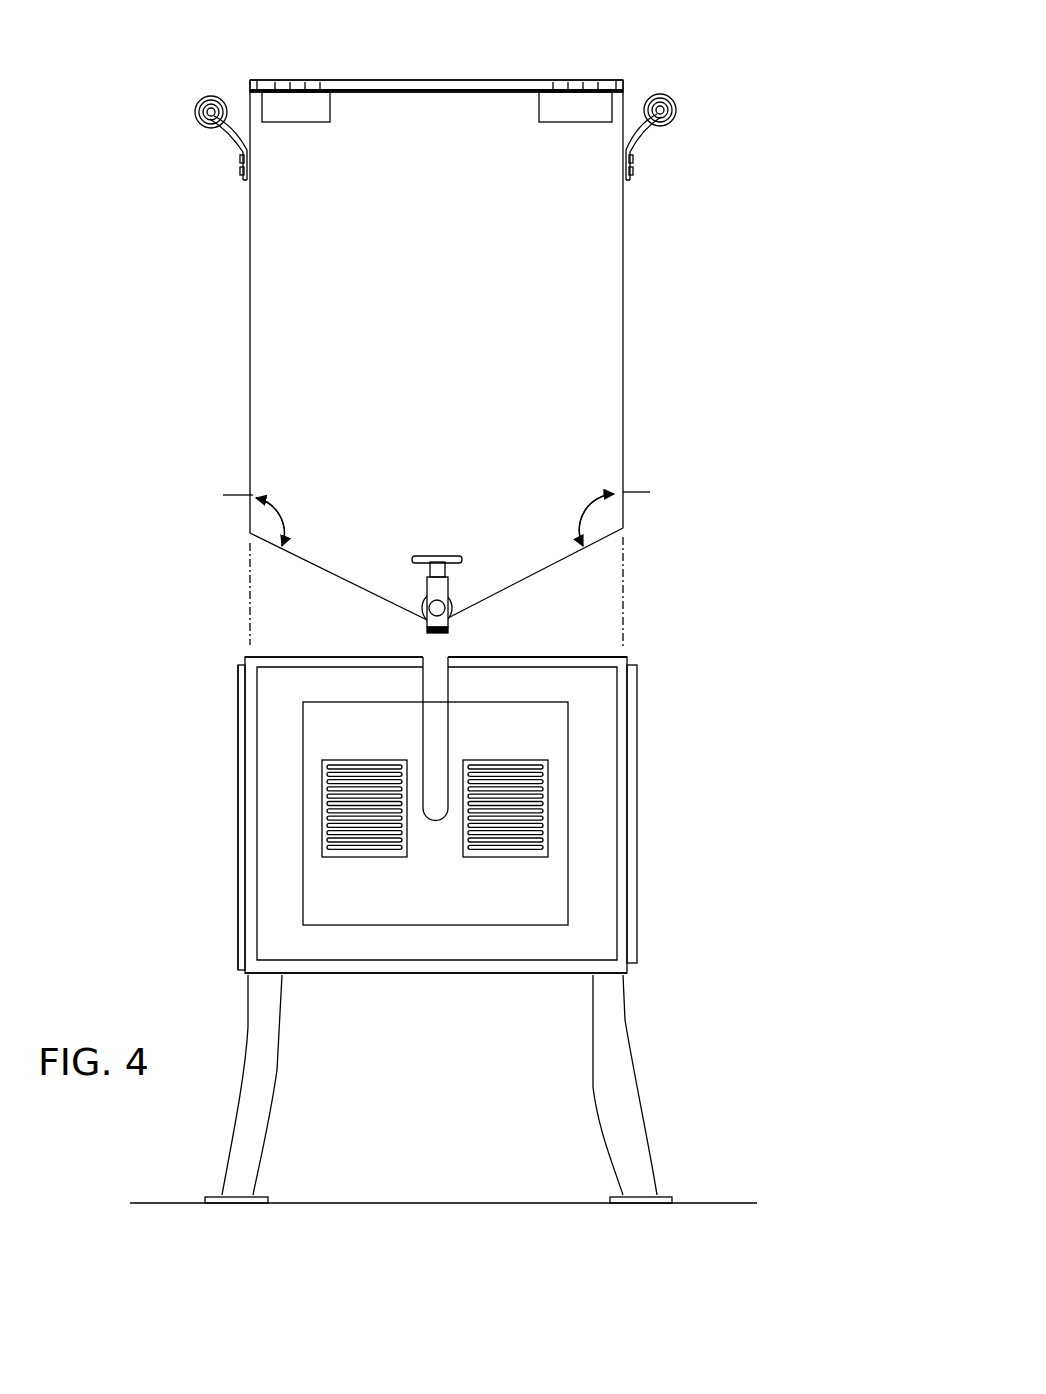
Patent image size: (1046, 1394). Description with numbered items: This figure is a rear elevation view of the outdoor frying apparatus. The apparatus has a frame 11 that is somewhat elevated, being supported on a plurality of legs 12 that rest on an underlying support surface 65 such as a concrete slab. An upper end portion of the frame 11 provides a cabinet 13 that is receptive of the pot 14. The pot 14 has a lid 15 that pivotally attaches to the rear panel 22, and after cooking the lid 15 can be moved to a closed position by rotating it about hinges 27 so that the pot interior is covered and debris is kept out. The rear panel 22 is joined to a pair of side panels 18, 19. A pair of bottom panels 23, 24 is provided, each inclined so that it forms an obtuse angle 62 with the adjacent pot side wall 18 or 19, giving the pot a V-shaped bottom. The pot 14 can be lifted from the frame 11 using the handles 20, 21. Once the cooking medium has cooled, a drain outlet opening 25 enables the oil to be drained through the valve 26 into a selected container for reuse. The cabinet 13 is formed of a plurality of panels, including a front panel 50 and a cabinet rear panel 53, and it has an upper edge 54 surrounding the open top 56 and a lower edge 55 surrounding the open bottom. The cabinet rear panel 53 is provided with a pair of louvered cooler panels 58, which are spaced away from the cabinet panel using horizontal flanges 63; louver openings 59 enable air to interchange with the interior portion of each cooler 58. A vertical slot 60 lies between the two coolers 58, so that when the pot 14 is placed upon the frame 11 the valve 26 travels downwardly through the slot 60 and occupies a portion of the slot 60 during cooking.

The frame 11 is at (637, 868).
The legs 12 is at (247, 1095).
The cabinet 13 is at (247, 907).
The pot 14 is at (587, 355).
The lid 15 is at (422, 80).
The side panel 18 is at (623, 422).
The side panel 19 is at (248, 308).
The handle 20 is at (677, 127).
The handle 21 is at (207, 130).
The rear panel 22 is at (430, 347).
The bottom panel 23 is at (548, 576).
The bottom panel 24 is at (343, 587).
The drain outlet opening 25 is at (453, 603).
The valve 26 is at (423, 582).
The hinges 27 is at (312, 112).
The front panel 50 is at (530, 940).
The cabinet rear panel 53 is at (597, 793).
The upper edge 54 is at (577, 653).
The lower edge 55 is at (375, 980).
The open top 56 is at (335, 653).
The louvered cooler panel 58 is at (451, 877).
The louver openings 59 is at (382, 825).
The vertical slot 60 is at (435, 735).
The obtuse angle 62 is at (282, 512).
The horizontal flanges 63 is at (637, 707).
The underlying support surface 65 is at (730, 1198).